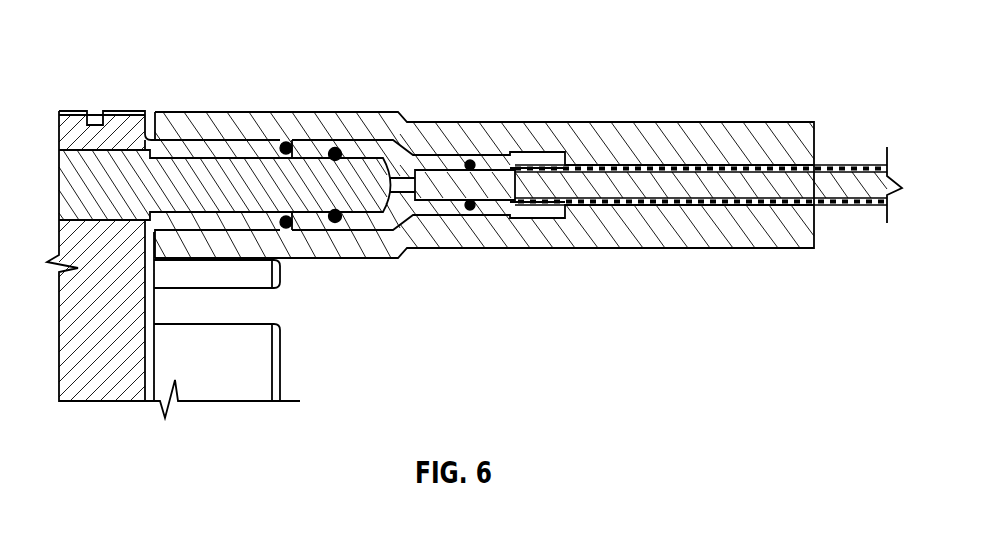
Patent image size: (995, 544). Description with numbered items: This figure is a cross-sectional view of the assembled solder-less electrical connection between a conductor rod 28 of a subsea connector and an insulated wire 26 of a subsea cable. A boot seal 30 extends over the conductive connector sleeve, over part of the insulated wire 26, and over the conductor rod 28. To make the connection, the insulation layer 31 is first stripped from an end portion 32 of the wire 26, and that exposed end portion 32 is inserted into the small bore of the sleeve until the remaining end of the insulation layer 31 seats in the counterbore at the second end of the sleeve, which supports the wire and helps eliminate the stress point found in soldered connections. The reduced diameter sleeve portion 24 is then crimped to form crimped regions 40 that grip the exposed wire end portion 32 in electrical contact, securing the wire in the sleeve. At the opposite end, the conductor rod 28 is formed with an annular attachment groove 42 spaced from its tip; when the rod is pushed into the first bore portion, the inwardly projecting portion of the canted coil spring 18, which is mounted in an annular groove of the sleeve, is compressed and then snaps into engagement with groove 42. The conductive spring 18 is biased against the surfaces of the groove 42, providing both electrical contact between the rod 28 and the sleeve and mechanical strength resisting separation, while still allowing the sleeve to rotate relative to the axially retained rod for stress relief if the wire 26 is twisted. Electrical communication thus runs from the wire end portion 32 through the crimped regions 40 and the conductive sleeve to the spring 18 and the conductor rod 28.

The resilient conductive member 18 is at (337, 150).
The smaller diameter portion 24 is at (385, 214).
The insulated wire 26 is at (816, 165).
The conductor rod 28 is at (160, 192).
The boot seal 30 is at (650, 130).
The insulation layer 31 is at (856, 165).
The end portion 32 is at (460, 178).
The crimped regions 40 is at (420, 208).
The annular attachment groove 42 is at (340, 220).